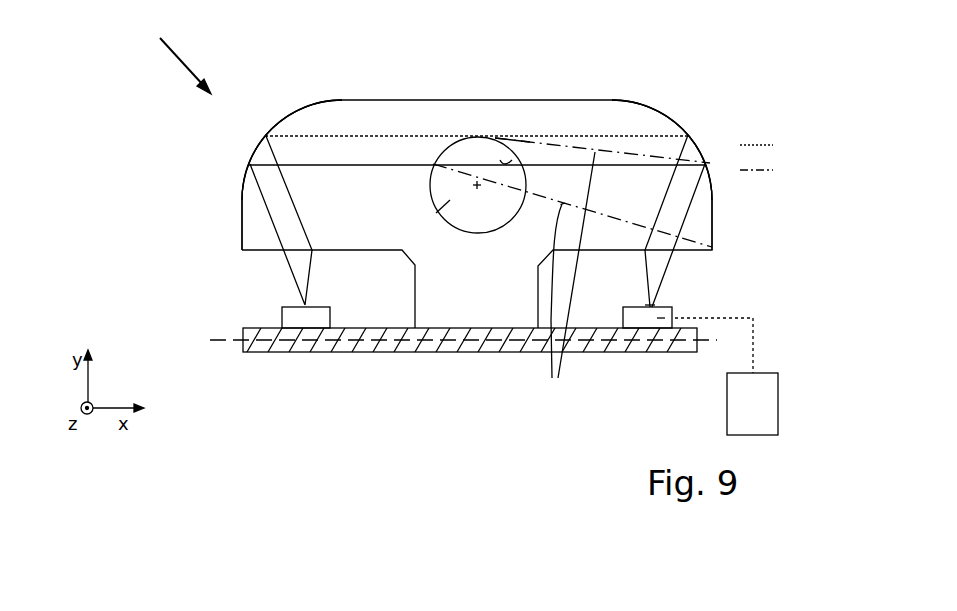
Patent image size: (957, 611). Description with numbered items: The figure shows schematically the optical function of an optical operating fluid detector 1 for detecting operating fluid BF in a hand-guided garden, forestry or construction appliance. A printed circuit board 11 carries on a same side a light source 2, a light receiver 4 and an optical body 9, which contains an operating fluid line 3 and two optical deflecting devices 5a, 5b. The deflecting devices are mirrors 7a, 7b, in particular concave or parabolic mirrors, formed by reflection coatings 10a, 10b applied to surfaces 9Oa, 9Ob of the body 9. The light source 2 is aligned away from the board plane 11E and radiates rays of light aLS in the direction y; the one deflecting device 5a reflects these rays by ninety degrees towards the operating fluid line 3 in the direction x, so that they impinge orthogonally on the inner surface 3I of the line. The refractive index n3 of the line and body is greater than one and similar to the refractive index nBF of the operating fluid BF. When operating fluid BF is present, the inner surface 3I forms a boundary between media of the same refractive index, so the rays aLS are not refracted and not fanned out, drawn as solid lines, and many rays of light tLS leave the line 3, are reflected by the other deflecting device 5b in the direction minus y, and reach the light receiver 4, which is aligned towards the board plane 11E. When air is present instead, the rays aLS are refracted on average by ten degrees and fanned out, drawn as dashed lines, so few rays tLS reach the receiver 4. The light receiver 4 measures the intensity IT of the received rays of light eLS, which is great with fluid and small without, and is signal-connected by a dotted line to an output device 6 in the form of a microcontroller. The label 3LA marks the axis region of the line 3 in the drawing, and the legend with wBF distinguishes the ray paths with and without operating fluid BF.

The optical operating fluid detector 1 is at (167, 63).
The light source 2 is at (282, 315).
The operating fluid line 3 is at (488, 148).
The detector light axis 3LA is at (474, 181).
The inner surface 3I is at (504, 160).
The operating fluid BF is at (487, 137).
The refractive index of operating fluid nBF is at (450, 201).
The with beam forming element wBF is at (785, 144).
The refractive index of operating fluid line n3 is at (383, 158).
The light receiver 4 is at (672, 317).
The optical deflecting device 5a is at (190, 166).
The mirror 7a is at (251, 162).
The optical deflecting device 5b is at (746, 148).
The mirror 7b is at (686, 131).
The output device 6 is at (759, 416).
The optical body 9 is at (367, 100).
The surface of the body 9Oa is at (292, 115).
The surface of the body 9Ob is at (668, 117).
The reflection coating 10a is at (305, 100).
The reflection coating 10b is at (641, 107).
The printed circuit board 11 is at (297, 352).
The board plane 11E is at (222, 342).
The rays of light aLS is at (302, 226).
The rays of light tLS is at (683, 228).
The received rays of light eLS is at (650, 305).
The intensity IT is at (661, 318).